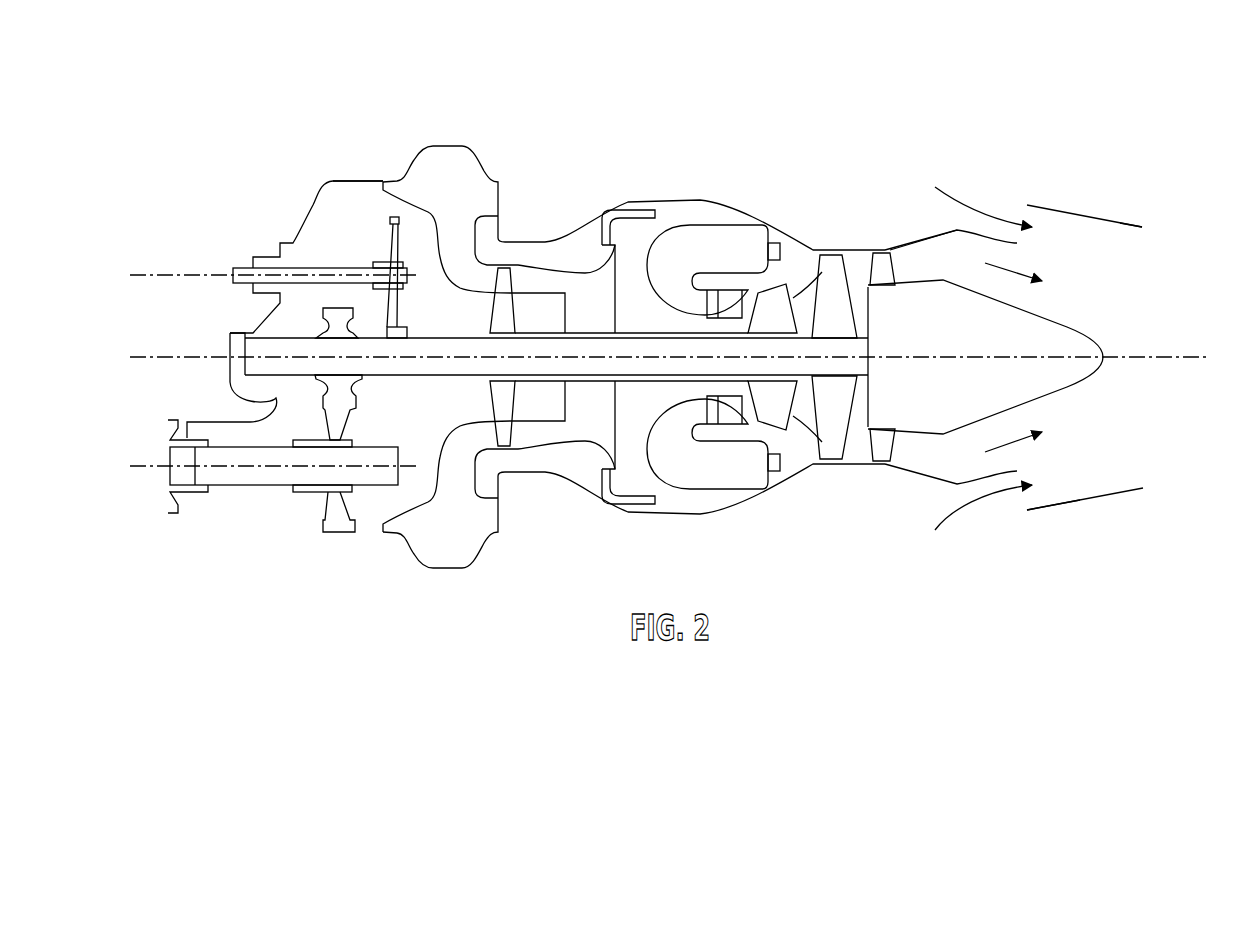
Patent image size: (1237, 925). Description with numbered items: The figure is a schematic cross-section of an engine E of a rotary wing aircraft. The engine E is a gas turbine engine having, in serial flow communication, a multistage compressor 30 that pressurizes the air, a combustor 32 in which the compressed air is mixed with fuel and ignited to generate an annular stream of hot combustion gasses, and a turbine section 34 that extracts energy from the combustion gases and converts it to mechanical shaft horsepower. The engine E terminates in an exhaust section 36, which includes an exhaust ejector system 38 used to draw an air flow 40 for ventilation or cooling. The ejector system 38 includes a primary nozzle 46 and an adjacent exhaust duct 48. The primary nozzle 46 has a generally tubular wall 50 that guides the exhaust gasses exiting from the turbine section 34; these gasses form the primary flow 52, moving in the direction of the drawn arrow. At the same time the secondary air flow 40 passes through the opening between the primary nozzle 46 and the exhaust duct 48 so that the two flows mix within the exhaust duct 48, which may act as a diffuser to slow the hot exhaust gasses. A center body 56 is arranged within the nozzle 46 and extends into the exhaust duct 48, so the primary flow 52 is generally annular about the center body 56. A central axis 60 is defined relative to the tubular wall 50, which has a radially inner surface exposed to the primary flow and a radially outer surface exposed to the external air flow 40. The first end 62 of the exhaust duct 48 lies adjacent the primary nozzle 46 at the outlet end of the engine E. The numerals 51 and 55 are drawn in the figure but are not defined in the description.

The engine E is at (320, 86).
The multistage compressor 30 is at (592, 302).
The combustor 32 is at (703, 240).
The turbine section 34 is at (831, 270).
The exhaust section 36 is at (1010, 597).
The exhaust ejector system 38 is at (976, 138).
The air flow 40 is at (995, 218).
The primary nozzle 46 is at (950, 257).
The exhaust duct 48 is at (1085, 210).
The tubular wall 50 is at (960, 458).
The mixed flow 51 is at (963, 495).
The primary flow 52 is at (1025, 272).
The outer surface 55 is at (1132, 222).
The center body 56 is at (1060, 330).
The central axis 60 is at (1152, 358).
The first end 62 is at (1050, 505).